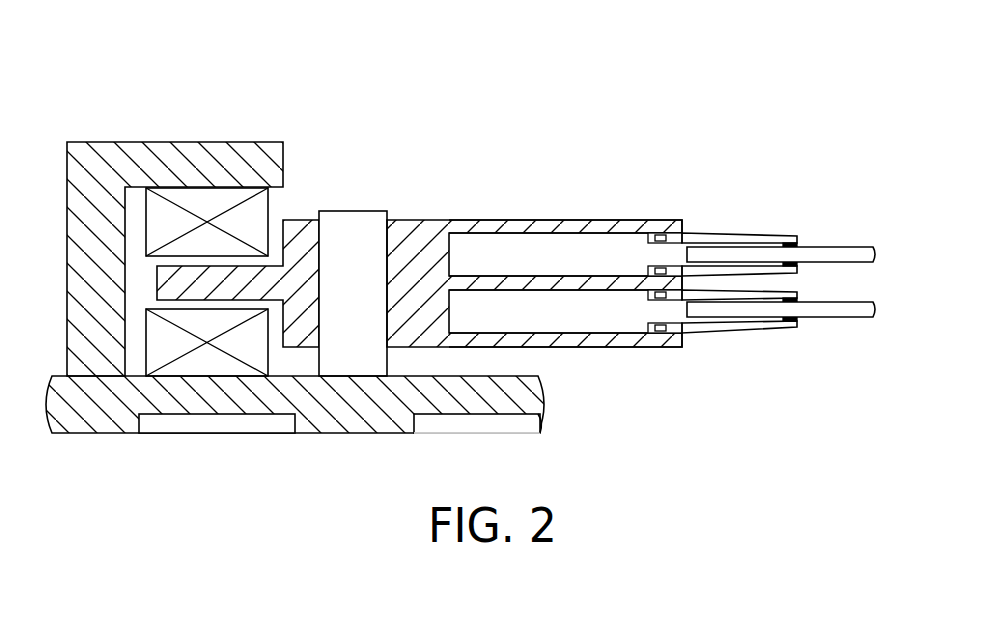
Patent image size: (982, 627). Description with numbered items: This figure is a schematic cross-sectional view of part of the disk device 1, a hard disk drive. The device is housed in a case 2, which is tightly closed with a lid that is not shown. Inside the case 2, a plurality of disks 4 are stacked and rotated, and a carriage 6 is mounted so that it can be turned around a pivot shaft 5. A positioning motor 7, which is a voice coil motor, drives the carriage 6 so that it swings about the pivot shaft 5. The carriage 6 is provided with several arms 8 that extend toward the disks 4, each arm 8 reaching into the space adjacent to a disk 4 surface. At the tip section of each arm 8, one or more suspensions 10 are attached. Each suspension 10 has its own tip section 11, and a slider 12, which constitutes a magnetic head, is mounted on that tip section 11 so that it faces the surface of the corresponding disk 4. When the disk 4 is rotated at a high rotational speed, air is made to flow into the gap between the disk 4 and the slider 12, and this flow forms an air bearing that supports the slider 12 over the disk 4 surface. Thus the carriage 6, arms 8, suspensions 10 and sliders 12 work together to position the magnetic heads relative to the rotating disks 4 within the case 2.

The disk device 1 is at (460, 258).
The case 2 is at (110, 435).
The disk 4 is at (873, 246).
The pivot shaft 5 is at (353, 220).
The carriage 6 is at (534, 268).
The positioning motor 7 is at (205, 365).
The arm 8 is at (594, 219).
The suspension 10 is at (765, 240).
The tip section 11 is at (753, 281).
The slider 12 is at (803, 243).